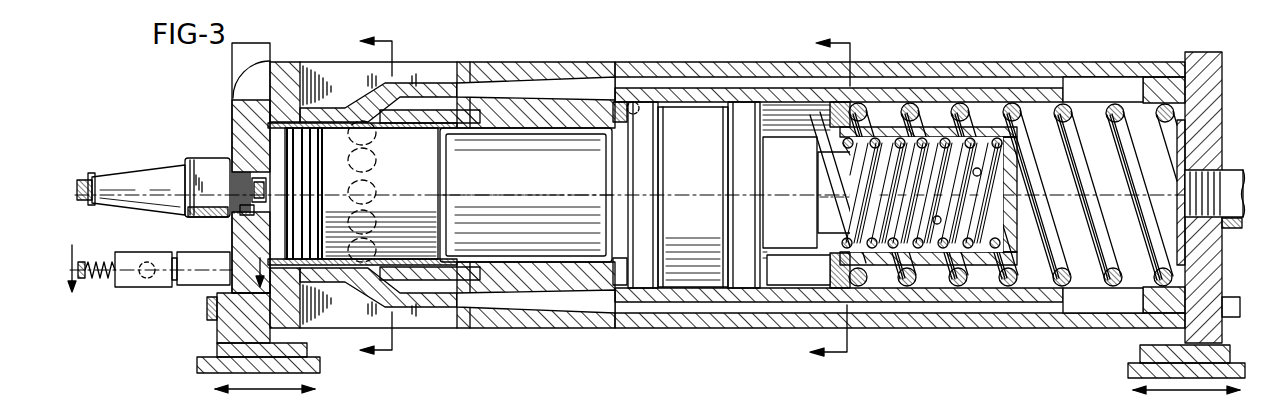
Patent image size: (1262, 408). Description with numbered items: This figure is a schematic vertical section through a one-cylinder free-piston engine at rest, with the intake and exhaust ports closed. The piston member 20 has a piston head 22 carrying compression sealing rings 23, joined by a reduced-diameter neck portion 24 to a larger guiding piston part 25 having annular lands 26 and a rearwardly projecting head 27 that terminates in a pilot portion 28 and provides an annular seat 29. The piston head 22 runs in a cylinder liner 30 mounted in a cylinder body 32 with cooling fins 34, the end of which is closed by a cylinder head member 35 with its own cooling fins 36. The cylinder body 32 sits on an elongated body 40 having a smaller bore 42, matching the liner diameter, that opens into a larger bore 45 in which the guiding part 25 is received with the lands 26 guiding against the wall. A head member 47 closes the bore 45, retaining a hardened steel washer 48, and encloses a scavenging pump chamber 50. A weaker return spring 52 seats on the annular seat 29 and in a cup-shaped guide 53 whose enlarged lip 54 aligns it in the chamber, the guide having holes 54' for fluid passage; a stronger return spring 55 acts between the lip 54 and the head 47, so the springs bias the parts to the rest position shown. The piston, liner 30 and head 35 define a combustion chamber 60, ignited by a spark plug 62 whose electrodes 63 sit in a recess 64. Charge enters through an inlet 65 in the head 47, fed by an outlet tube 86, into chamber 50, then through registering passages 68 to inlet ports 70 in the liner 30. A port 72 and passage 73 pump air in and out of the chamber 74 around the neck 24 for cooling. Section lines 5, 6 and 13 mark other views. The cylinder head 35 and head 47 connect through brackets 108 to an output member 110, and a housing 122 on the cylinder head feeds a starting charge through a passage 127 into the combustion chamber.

The section line 5- 5 is at (387, 198).
The section line 6- 6 is at (839, 199).
The section line 13- 13 is at (174, 280).
The piston member 20 is at (528, 232).
The piston head 22 is at (362, 194).
The compression sealing rings 23 is at (287, 152).
The neck portion 24 is at (526, 195).
The guiding piston part 25 is at (693, 197).
The annular lands 26 is at (652, 112).
The rearwardly projecting head 27 is at (796, 181).
The pilot portion 28 is at (845, 192).
The annular seat 29 is at (822, 197).
The cylinder liner 30 is at (425, 267).
The cylinder body 32 is at (293, 63).
The cooling fins 34 is at (338, 76).
The cylinder head member 35 is at (238, 57).
The cooling fins 36 is at (240, 101).
The body 40 is at (915, 68).
The smaller bore 42 is at (560, 100).
The bore 45 is at (990, 110).
The head member 47 is at (1205, 52).
The hardened steel washer 48 is at (1175, 95).
The scavenging pump chamber 50 is at (1090, 122).
The return spring 52 is at (945, 280).
The cup-shaped guide 53 is at (983, 265).
The lip 54 is at (915, 273).
The holes 54' is at (929, 157).
The return spring 55 is at (1043, 283).
The combustion chamber 60 is at (288, 164).
The spark plug 62 is at (127, 182).
The electrodes 63 is at (250, 228).
The recess 64 is at (235, 160).
The inlet 65 is at (1235, 185).
The passages 68 is at (500, 97).
The inlet ports 70 is at (373, 130).
The port 72 is at (618, 100).
The passage 73 is at (630, 102).
The chamber 74 is at (620, 288).
The outlet tube 86 is at (1240, 232).
The brackets 108 is at (217, 350).
The output member 110 is at (200, 372).
The housing 122 is at (168, 292).
The passage 127 is at (250, 255).